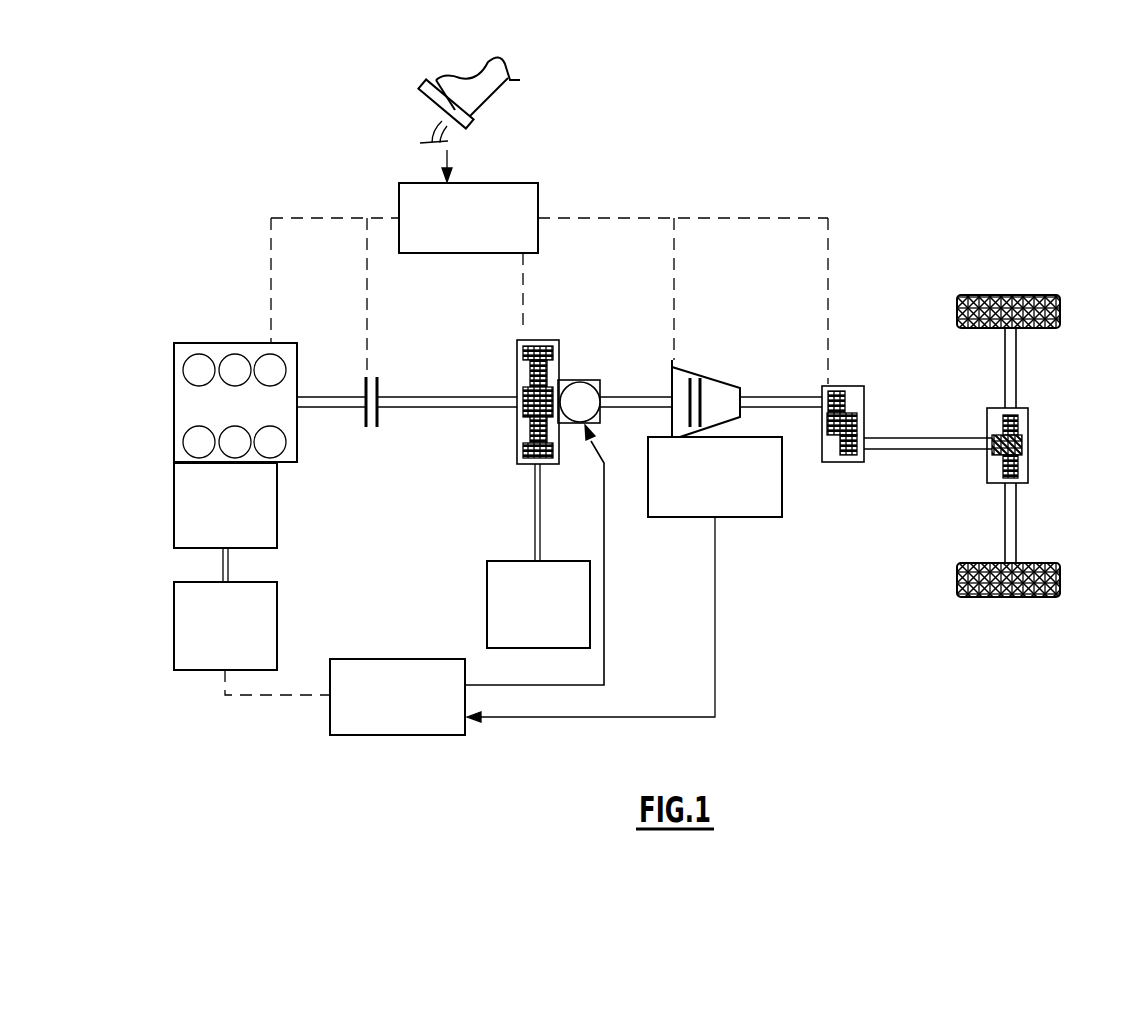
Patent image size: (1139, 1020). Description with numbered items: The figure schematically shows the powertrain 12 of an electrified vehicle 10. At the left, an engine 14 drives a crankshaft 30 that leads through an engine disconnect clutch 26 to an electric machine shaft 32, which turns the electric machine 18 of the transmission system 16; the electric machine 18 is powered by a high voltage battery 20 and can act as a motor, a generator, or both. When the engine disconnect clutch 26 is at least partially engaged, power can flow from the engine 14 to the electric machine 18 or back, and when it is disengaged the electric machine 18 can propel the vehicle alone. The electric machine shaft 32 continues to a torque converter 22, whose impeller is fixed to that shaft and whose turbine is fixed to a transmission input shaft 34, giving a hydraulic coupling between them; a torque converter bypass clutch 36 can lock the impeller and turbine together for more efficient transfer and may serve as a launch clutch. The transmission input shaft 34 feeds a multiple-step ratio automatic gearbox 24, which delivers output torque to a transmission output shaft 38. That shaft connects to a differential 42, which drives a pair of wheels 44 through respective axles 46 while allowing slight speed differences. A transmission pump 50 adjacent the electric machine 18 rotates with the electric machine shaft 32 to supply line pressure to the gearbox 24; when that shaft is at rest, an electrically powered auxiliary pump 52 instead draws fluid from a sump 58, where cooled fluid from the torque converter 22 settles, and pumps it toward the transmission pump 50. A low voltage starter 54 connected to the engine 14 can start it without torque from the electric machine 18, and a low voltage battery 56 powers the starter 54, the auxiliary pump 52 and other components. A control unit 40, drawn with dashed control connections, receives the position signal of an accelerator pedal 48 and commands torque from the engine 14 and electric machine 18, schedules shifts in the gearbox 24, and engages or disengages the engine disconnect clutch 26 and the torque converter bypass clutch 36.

The electrified vehicle 10 is at (628, 120).
The powertrain 12 is at (432, 448).
The engine 14 is at (226, 325).
The transmission system 16 is at (768, 323).
The electric machine 18 is at (548, 325).
The high voltage battery 20 is at (487, 583).
The torque converter 22 is at (716, 363).
The gearbox 24 is at (860, 373).
The engine disconnect clutch 26 is at (382, 362).
The crankshaft 30 is at (312, 390).
The electric machine shaft 32 is at (428, 390).
The transmission input shaft 34 is at (788, 390).
The torque converter bypass clutch 36 is at (688, 380).
The transmission output shaft 38 is at (907, 450).
The control unit 40 is at (540, 203).
The differential 42 is at (1028, 447).
The wheels 44 is at (1025, 597).
The axles 46 is at (1017, 380).
The accelerator pedal 48 is at (420, 88).
The transmission pump 50 is at (592, 362).
The auxiliary pump 52 is at (373, 735).
The low voltage starter 54 is at (277, 503).
The low voltage battery 56 is at (277, 626).
The sump 58 is at (782, 505).